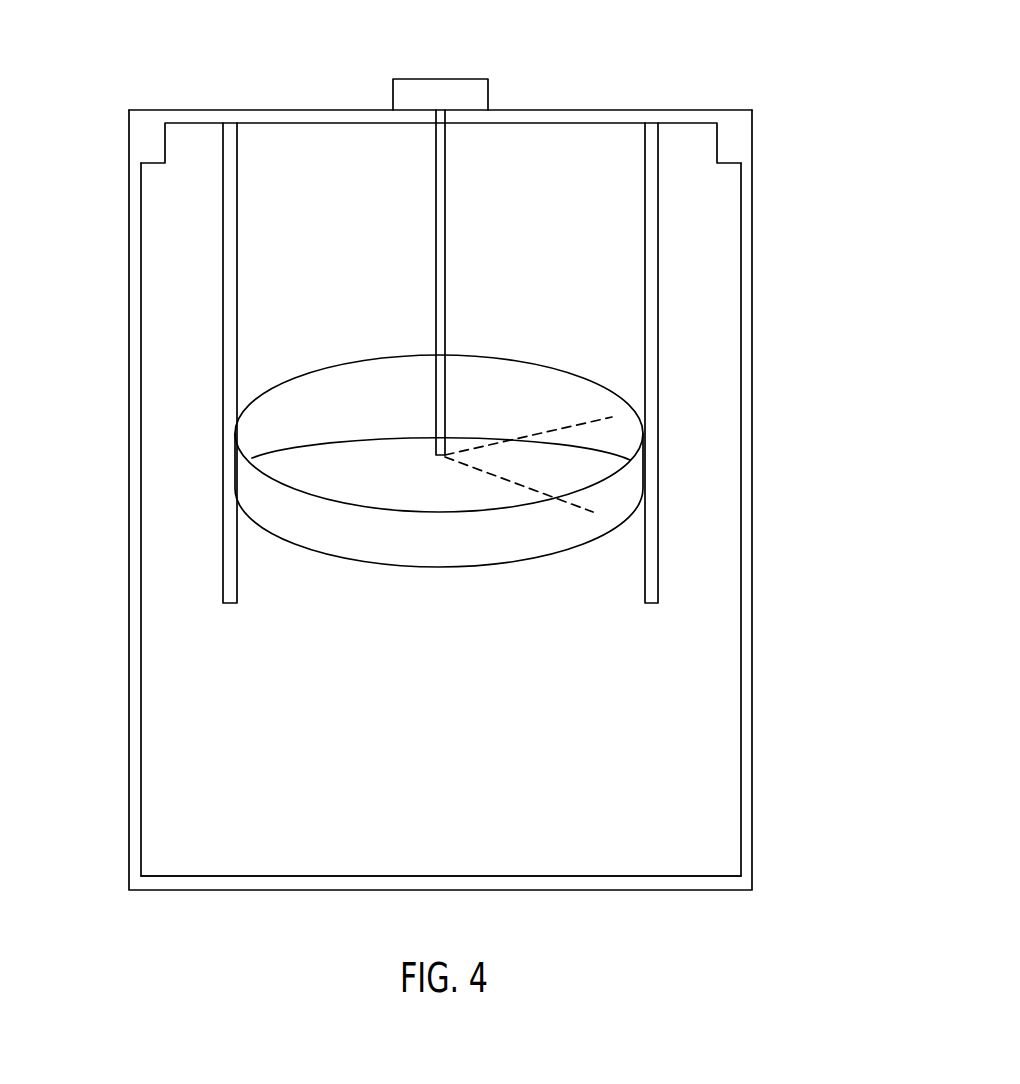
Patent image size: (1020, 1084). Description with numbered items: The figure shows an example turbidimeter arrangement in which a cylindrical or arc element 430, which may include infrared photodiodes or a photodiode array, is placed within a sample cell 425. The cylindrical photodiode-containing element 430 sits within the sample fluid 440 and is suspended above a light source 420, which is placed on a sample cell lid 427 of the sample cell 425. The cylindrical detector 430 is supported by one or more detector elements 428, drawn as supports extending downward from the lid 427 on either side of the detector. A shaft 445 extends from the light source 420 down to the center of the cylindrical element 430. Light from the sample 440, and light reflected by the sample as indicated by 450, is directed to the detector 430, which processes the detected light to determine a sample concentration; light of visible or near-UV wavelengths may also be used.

The light source 420 is at (440, 88).
The sample cell lid 427 is at (605, 110).
The drive shaft 445 is at (436, 228).
The detector elements 428 is at (658, 315).
The cylindrical or arc element 430 is at (310, 413).
The light reflected by the sample 450 is at (518, 438).
The sample cell 425 is at (753, 651).
The sample fluid 440 is at (688, 786).